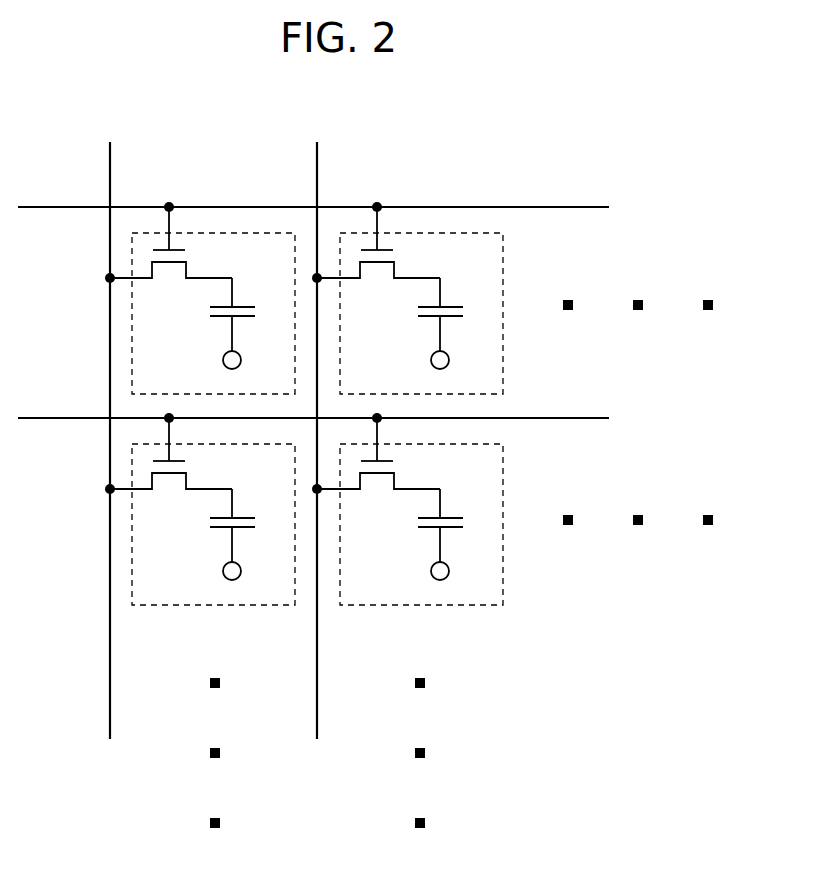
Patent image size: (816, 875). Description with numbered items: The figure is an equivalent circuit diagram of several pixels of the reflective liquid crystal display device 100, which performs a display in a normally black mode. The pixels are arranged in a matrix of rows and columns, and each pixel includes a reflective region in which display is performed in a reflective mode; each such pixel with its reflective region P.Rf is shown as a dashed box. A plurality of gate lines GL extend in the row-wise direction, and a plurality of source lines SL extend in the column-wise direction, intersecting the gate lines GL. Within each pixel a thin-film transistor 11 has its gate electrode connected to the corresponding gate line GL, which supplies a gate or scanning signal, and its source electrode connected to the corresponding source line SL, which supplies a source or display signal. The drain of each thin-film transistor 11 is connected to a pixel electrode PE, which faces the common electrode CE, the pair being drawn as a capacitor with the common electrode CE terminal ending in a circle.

The liquid crystal display device 100 is at (659, 176).
The gate line GL is at (210, 206).
The source line SL is at (109, 343).
The pixel with reflective region P.Rf is at (250, 232).
The thin-film transistor 11 is at (168, 283).
The pixel electrode PE is at (247, 302).
The common electrode CE is at (244, 321).